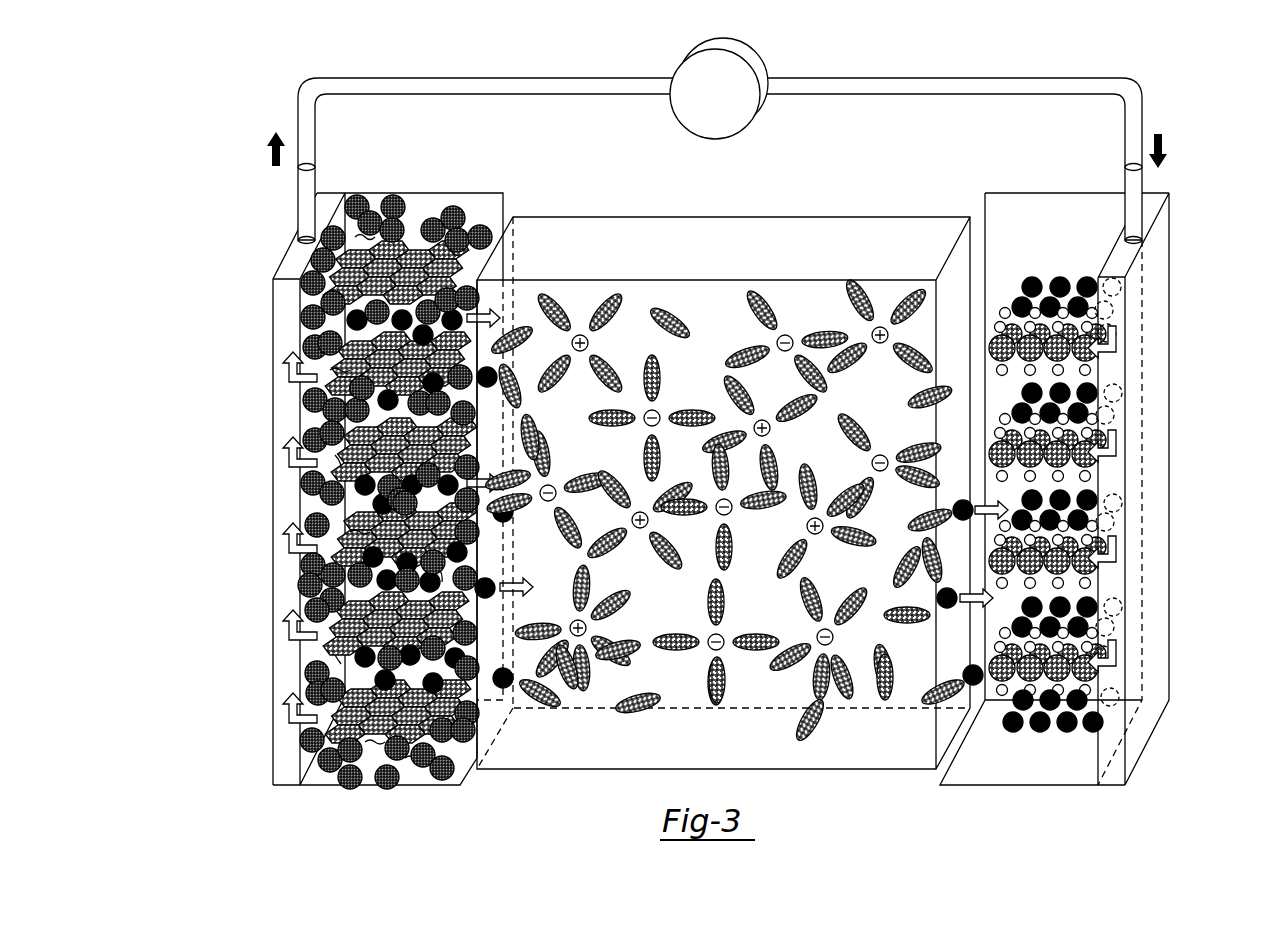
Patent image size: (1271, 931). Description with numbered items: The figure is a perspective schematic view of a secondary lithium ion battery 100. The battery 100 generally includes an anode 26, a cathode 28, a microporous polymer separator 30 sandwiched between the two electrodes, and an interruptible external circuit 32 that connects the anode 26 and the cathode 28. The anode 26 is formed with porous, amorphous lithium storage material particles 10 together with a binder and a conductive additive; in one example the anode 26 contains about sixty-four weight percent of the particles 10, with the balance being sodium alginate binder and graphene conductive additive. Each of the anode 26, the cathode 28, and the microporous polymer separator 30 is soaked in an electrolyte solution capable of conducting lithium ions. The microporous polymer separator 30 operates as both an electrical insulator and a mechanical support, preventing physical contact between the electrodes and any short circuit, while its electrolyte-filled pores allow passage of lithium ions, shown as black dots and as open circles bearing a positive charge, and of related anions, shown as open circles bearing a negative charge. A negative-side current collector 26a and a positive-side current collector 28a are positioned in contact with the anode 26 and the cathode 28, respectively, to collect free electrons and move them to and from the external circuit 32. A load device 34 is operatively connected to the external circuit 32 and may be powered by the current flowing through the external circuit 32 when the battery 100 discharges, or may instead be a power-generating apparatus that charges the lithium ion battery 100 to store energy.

The porous, amorphous lithium storage material particles 10 is at (486, 232).
The anode 26 is at (368, 752).
The negative-side current collector 26a is at (283, 762).
The cathode 28 is at (1007, 745).
The positive-side current collector 28a is at (1112, 780).
The microporous polymer separator 30 is at (505, 770).
The external circuit 32 is at (557, 78).
The load device 34 is at (764, 56).
The lithium ion battery 100 is at (1174, 89).